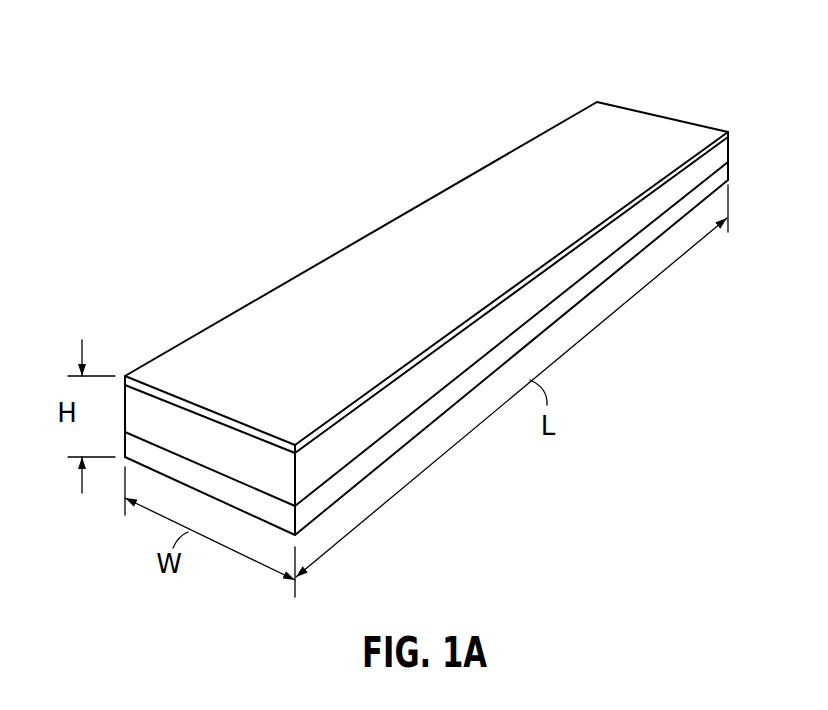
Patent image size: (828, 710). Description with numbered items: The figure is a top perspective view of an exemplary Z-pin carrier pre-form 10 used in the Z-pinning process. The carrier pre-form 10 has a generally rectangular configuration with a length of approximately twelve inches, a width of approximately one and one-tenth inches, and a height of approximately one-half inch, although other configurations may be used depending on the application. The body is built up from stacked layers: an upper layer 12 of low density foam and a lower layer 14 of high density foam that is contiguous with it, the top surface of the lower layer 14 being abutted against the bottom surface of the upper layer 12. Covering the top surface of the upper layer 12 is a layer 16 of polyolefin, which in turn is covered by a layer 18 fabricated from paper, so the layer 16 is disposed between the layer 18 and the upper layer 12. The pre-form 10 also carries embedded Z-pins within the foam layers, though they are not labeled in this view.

The Z-pin carrier pre-form 10 is at (332, 186).
The upper layer 12 is at (247, 463).
The lower layer 14 is at (355, 475).
The layer of polyolefin 16 is at (728, 133).
The layer of paper 18 is at (660, 127).